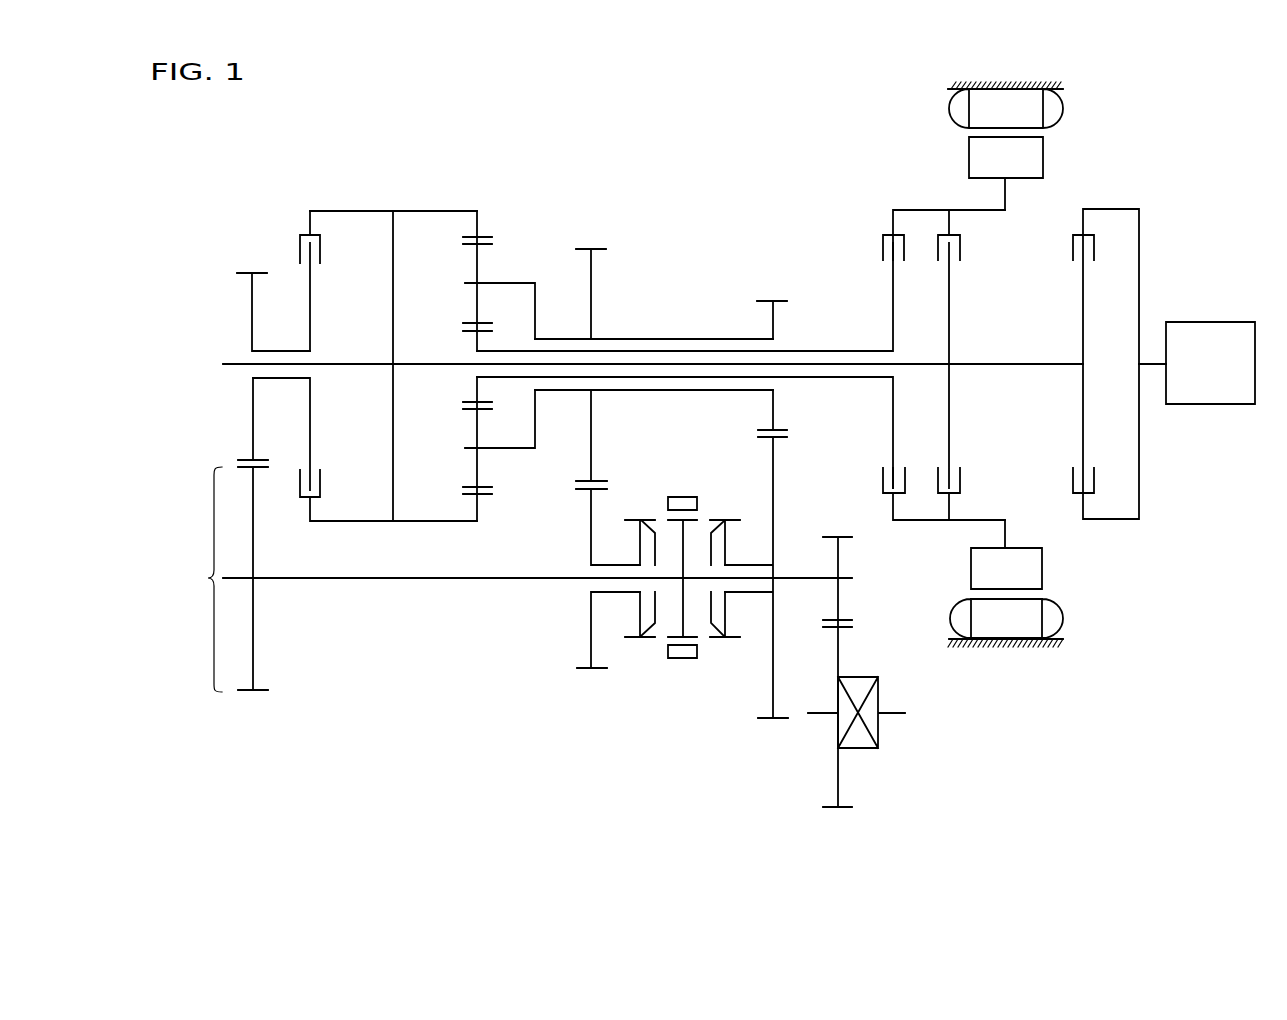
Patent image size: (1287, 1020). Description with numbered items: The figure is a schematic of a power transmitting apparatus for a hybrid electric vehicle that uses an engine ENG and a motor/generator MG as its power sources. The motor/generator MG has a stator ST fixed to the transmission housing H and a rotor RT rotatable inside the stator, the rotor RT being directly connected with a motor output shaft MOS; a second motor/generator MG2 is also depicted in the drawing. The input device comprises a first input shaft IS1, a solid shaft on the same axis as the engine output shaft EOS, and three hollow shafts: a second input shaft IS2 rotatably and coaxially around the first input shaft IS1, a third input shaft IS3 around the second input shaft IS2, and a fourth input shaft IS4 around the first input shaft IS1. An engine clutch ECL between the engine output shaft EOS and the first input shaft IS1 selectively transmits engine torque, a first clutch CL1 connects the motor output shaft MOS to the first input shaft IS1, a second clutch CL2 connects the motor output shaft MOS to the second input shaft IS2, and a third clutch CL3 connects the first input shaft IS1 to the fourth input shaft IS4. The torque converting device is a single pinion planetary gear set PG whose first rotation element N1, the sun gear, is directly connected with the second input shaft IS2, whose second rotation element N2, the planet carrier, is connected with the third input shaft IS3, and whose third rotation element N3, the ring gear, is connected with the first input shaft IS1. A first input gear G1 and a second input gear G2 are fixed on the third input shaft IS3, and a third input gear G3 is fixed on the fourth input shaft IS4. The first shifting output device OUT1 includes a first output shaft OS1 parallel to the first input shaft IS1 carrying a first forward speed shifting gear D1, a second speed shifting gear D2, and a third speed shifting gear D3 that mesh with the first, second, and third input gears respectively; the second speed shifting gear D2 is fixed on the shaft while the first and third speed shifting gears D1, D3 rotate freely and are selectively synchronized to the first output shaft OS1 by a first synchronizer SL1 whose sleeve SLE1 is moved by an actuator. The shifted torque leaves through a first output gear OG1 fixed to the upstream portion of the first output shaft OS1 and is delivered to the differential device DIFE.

The first input shaft IS1 is at (846, 358).
The second input shaft IS2 is at (825, 379).
The third input shaft IS3 is at (687, 392).
The fourth input shaft IS4 is at (281, 379).
The first output shaft OS1 is at (442, 581).
The engine output shaft EOS is at (1148, 362).
The third input gear G3 is at (247, 271).
The third clutch CL3 is at (296, 218).
The second speed shifting gear D2 is at (254, 636).
The first shifting output device OUT1 is at (192, 579).
The planetary gear set PG is at (505, 252).
The third rotation element N3 is at (490, 236).
The second rotation element N2 is at (466, 283).
The first rotation element N1 is at (473, 338).
The second input gear G2 is at (590, 248).
The first input gear G1 is at (763, 299).
The third speed shifting gear D3 is at (591, 640).
The first forward speed shifting gear D1 is at (774, 676).
The first synchronizer SL1 is at (659, 674).
The sleeve SLE1 is at (688, 660).
The first output gear OG1 is at (840, 563).
The differential device DIFE is at (879, 733).
The second clutch CL2 is at (880, 234).
The first clutch CL1 is at (937, 234).
The motor output shaft MOS is at (990, 212).
The motor/generator MG is at (1030, 109).
The second motor/generator MG2 is at (1005, 583).
The stator ST is at (1006, 108).
The rotor RT is at (1006, 157).
The transmission housing H is at (1028, 79).
The engine clutch ECL is at (1099, 236).
The engine ENG is at (1210, 363).